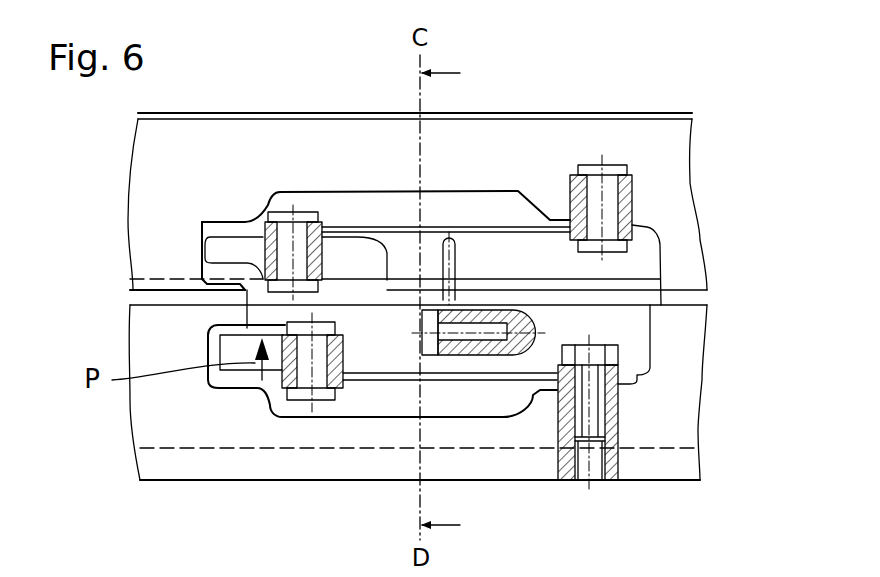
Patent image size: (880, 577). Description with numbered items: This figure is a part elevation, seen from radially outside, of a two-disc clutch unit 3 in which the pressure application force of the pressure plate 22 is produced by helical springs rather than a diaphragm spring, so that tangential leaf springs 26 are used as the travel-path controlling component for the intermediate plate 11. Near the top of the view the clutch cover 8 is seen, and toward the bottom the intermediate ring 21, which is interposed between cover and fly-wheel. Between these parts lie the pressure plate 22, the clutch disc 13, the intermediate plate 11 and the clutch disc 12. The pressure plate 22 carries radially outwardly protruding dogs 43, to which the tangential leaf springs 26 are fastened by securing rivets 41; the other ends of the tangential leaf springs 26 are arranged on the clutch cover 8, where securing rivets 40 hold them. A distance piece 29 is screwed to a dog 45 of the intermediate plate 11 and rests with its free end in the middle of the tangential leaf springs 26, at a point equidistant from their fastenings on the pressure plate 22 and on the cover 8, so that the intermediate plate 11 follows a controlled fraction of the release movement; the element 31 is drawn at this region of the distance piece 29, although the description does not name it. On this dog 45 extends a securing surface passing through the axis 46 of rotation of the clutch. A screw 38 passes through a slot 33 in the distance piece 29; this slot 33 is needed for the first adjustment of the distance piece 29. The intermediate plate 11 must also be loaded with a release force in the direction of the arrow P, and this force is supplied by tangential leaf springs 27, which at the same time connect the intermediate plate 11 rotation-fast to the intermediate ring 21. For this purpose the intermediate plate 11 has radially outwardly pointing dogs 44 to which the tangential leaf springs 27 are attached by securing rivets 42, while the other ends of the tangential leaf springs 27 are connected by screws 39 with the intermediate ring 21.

The clutch unit 3 is at (714, 101).
The clutch cover 8 is at (653, 150).
The intermediate plate 11 is at (642, 322).
The clutch disc 12 is at (672, 462).
The clutch disc 13 is at (678, 280).
The intermediate ring 21 is at (167, 343).
The pressure plate 22 is at (618, 263).
The tangential leaf springs 26 is at (363, 210).
The tangential leaf springs 27 is at (360, 400).
The distance piece 29 is at (465, 303).
The stop pin 31 is at (446, 222).
The slot 33 is at (490, 228).
The screw 38 is at (443, 393).
The screws 39 is at (612, 357).
The securing rivets 40 is at (603, 148).
The securing rivets 41 is at (285, 238).
The securing rivets 42 is at (312, 402).
The dogs 43 is at (262, 258).
The dogs 44 is at (262, 380).
The dog 45 is at (557, 410).
The axis of rotation 46 is at (417, 150).